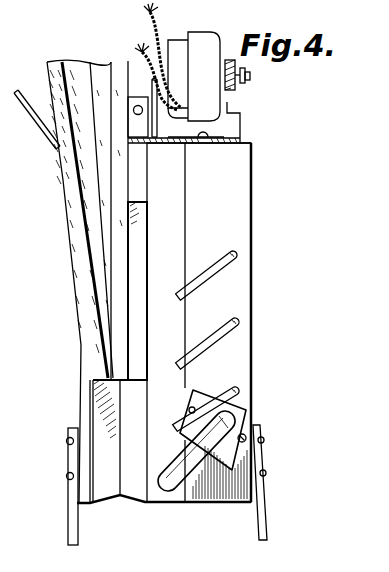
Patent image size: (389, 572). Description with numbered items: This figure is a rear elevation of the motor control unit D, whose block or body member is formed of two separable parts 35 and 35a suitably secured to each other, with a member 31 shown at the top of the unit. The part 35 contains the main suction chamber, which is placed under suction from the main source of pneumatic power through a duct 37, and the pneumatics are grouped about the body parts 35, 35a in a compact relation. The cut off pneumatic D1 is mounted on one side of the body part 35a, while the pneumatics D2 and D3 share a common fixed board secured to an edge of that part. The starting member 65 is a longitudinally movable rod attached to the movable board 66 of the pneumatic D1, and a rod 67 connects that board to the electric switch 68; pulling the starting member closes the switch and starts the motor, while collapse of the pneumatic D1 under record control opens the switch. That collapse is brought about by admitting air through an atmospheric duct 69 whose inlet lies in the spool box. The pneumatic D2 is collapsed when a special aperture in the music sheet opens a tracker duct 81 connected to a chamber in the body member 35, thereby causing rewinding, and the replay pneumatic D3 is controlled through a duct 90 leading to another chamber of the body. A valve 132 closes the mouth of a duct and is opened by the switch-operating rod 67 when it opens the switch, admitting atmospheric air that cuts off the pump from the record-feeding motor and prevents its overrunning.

The top shelf of column 31 is at (146, 143).
The body part 35 is at (199, 302).
The body part 35a is at (154, 291).
The duct 37 is at (207, 472).
The starting member 65 is at (40, 122).
The movable board 66 is at (82, 244).
The rod 67 is at (149, 82).
The electric switch 68 is at (210, 45).
The atmospheric duct 69 is at (212, 275).
The tracker duct 81 is at (212, 339).
The duct 90 is at (220, 396).
The valve 132 is at (165, 106).
The motor control unit D is at (109, 486).
The cut off pneumatic D1 is at (93, 196).
The pneumatic D2 is at (104, 400).
The replay pneumatic D3 is at (262, 468).